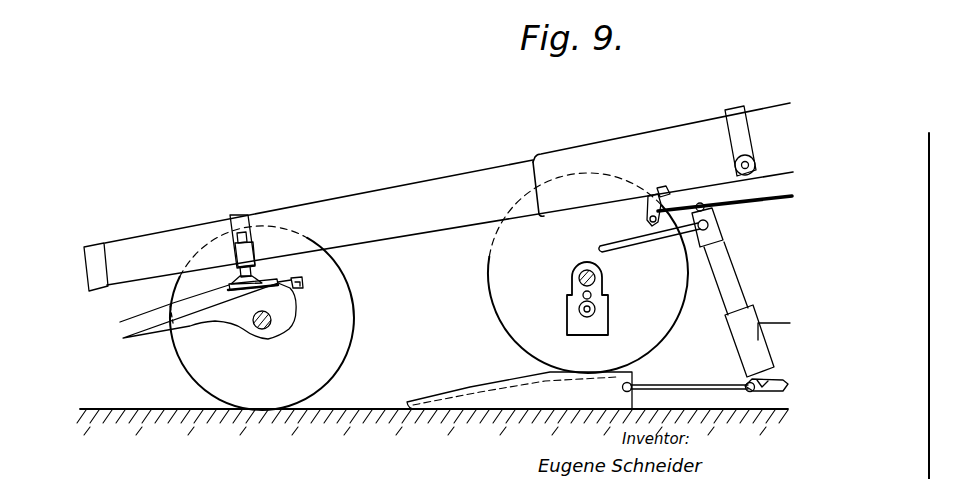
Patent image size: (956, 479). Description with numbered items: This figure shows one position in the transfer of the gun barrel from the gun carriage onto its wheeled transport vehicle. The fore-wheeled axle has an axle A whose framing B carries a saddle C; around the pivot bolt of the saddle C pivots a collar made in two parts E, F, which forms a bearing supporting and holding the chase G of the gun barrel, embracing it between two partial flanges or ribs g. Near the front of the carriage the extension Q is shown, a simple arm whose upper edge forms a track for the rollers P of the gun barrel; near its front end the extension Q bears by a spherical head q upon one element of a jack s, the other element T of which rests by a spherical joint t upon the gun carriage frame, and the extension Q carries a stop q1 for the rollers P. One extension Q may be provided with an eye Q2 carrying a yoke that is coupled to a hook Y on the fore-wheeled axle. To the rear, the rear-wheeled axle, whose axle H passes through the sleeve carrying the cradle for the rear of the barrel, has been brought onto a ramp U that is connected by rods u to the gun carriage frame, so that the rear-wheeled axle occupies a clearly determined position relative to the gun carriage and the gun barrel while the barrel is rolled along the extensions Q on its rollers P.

The chase of the gun barrel G is at (171, 245).
The rollers P is at (751, 164).
The framing B is at (280, 307).
The axle A is at (262, 328).
The collar part E is at (247, 287).
The saddle C is at (228, 290).
The hook Y is at (303, 283).
The collar part F is at (241, 214).
The partial flanges or ribs g is at (236, 247).
The axle H is at (596, 279).
The ramp U is at (530, 400).
The rods u is at (688, 383).
The spherical joint t is at (758, 391).
The jack element T is at (741, 350).
The jack s is at (733, 272).
The eye Q2 is at (648, 215).
The stop q1 is at (663, 188).
The spherical head q is at (702, 205).
The extensions Q is at (774, 190).